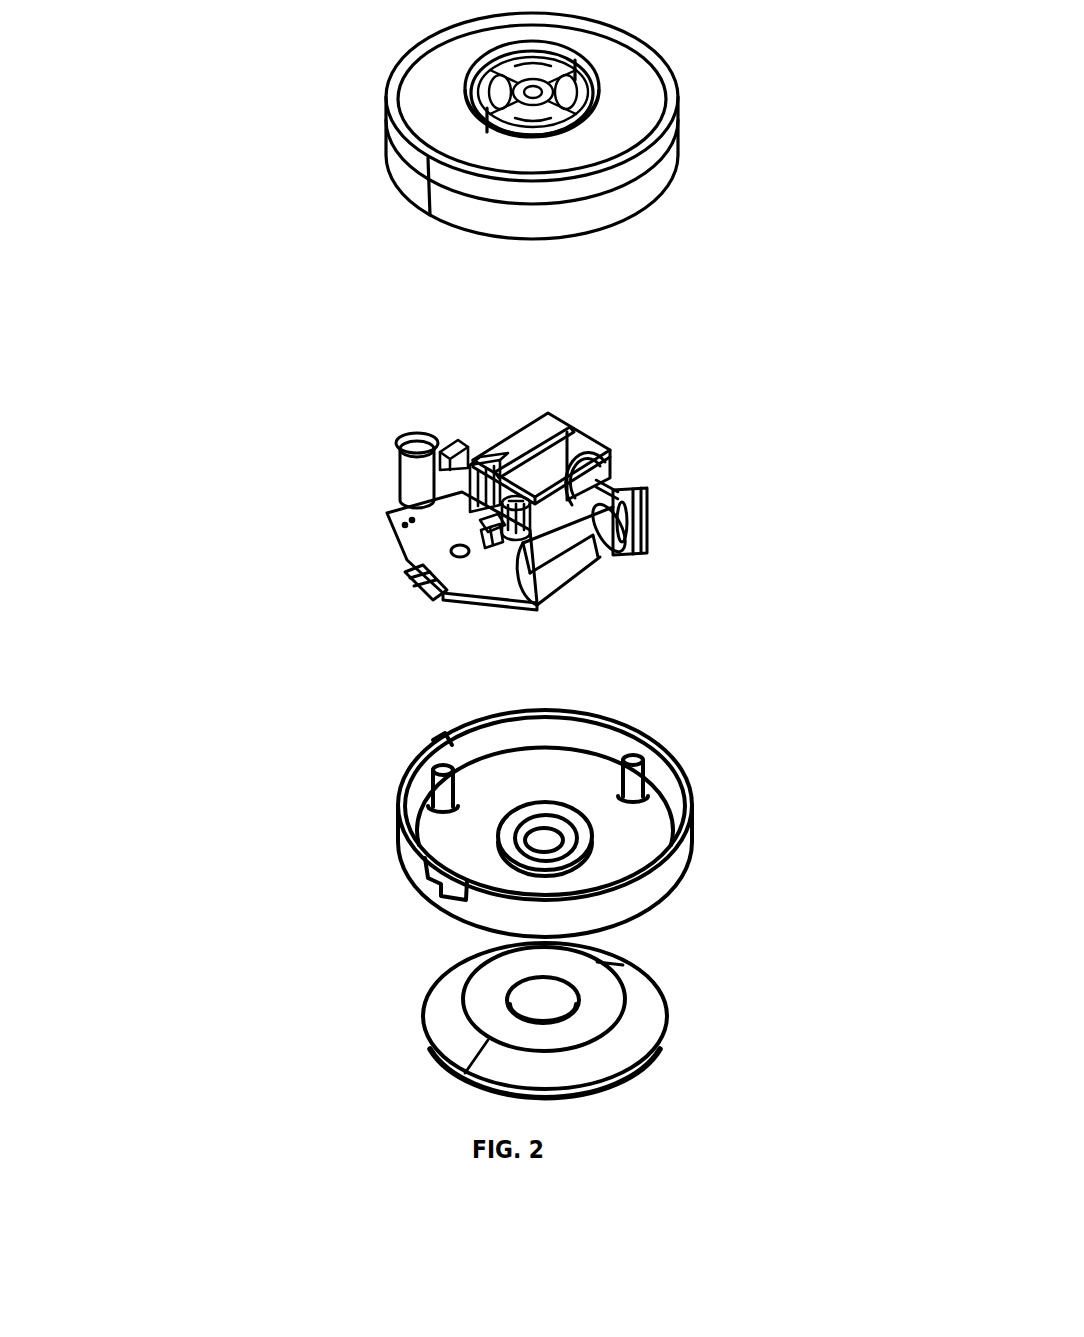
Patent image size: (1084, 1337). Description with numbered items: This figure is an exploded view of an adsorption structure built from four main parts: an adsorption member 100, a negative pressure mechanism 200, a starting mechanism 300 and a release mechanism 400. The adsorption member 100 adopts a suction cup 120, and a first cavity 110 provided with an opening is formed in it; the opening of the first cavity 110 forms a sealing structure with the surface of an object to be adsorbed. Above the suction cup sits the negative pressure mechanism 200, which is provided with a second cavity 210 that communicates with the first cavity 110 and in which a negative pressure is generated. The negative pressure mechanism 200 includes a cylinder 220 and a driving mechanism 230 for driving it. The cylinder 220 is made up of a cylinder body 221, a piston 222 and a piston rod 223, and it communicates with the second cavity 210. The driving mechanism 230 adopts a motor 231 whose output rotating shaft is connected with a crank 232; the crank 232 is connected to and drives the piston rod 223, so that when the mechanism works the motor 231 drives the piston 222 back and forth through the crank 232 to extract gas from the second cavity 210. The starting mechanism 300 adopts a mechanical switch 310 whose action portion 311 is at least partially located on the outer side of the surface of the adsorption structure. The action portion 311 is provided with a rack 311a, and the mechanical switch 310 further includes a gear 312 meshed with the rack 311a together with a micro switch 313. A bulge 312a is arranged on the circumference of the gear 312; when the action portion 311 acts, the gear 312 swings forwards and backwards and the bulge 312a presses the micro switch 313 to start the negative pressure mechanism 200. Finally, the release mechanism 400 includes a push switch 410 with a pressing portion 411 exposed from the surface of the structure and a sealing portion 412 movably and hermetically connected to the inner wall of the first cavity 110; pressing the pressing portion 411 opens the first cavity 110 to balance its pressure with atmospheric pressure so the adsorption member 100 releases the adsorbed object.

The adsorption member 100 is at (762, 1052).
The first cavity 110 is at (612, 1086).
The suction cup 120 is at (608, 1063).
The negative pressure mechanism 200 is at (797, 692).
The second cavity 210 is at (609, 821).
The cylinder 220 is at (718, 472).
The cylinder body 221 is at (572, 428).
The piston 222 is at (604, 460).
The piston rod 223 is at (616, 484).
The driving mechanism 230 is at (677, 593).
The motor 231 is at (602, 547).
The crank 232 is at (636, 538).
The starting mechanism 300 is at (197, 703).
The mechanical switch 310 is at (573, 652).
The action portion 311 is at (484, 465).
The rack 311a is at (491, 534).
The gear 312 is at (497, 541).
The bulge 312a is at (403, 565).
The micro switch 313 is at (493, 523).
The release mechanism 400 is at (517, 450).
The push switch 410 is at (469, 353).
The pressing portion 411 is at (412, 437).
The sealing portion 412 is at (487, 452).